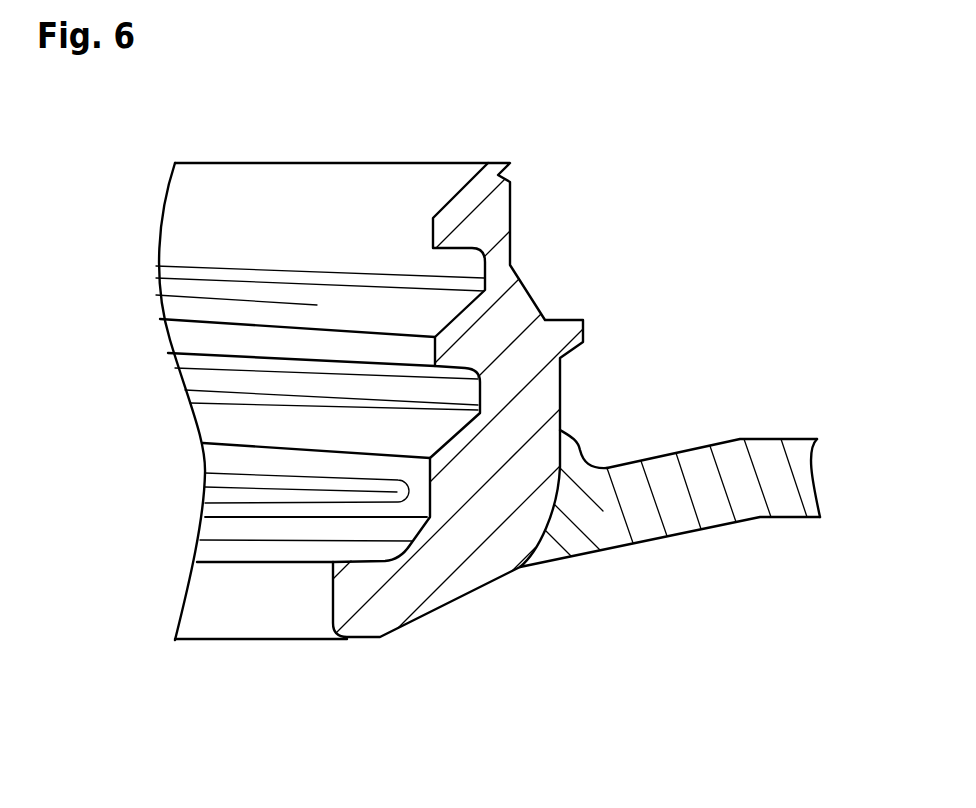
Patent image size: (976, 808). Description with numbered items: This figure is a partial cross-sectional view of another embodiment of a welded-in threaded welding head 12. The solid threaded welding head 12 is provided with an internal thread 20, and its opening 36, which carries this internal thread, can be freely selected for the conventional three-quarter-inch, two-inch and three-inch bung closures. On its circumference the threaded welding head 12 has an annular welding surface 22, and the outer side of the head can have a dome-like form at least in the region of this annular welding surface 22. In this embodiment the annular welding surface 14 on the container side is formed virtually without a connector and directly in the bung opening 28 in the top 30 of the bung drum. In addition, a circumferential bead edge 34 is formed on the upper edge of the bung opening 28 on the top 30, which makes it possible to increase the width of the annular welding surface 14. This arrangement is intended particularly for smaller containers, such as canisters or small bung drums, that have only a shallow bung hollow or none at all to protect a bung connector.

The threaded welding head 12 is at (498, 323).
The annular welding surface on the container side 14 is at (558, 502).
The internal thread 20 is at (350, 307).
The annular welding surface 22 is at (548, 528).
The bung opening 28 is at (520, 567).
The top 30 is at (784, 450).
The circumferential bead edge 34 is at (573, 446).
The opening 36 is at (252, 617).